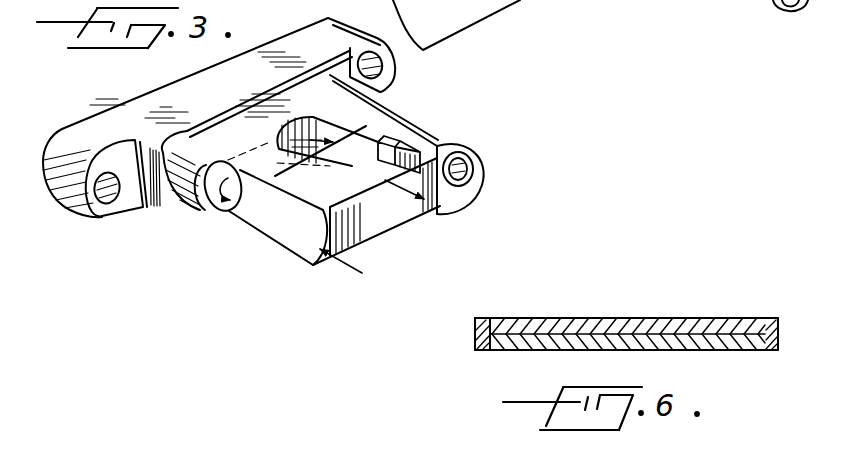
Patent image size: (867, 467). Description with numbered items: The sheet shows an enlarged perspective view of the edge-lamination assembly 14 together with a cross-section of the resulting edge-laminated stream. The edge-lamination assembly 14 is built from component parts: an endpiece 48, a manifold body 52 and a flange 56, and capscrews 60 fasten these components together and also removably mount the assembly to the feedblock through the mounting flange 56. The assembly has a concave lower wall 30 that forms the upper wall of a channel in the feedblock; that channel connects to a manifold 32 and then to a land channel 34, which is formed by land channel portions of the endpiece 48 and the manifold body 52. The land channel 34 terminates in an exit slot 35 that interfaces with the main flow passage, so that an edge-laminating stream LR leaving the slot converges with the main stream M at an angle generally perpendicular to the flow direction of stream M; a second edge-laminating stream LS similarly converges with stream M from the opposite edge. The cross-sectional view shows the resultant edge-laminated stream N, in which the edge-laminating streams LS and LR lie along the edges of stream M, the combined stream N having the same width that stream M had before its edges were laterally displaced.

In FIG. 3, the edge-lamination assembly 14 is at (190, 217).
In FIG. 3, the concave lower wall 30 is at (285, 229).
In FIG. 3, the manifold 32 is at (292, 86).
In FIG. 3, the land channel 34 is at (390, 138).
In FIG. 3, the exit slot 35 is at (386, 176).
In FIG. 3, the endpiece 48 is at (455, 143).
In FIG. 3, the manifold body 52 is at (380, 108).
In FIG. 3, the flange 56 is at (110, 122).
In FIG. 3, the capscrews 60 is at (476, 166).
In FIG. 6, the edge-laminated stream N is at (575, 316).
In FIG. 6, the stream M is at (667, 318).
In FIG. 6, the edge-laminating stream LS is at (475, 336).
In FIG. 6, the edge-laminating stream LR is at (782, 326).